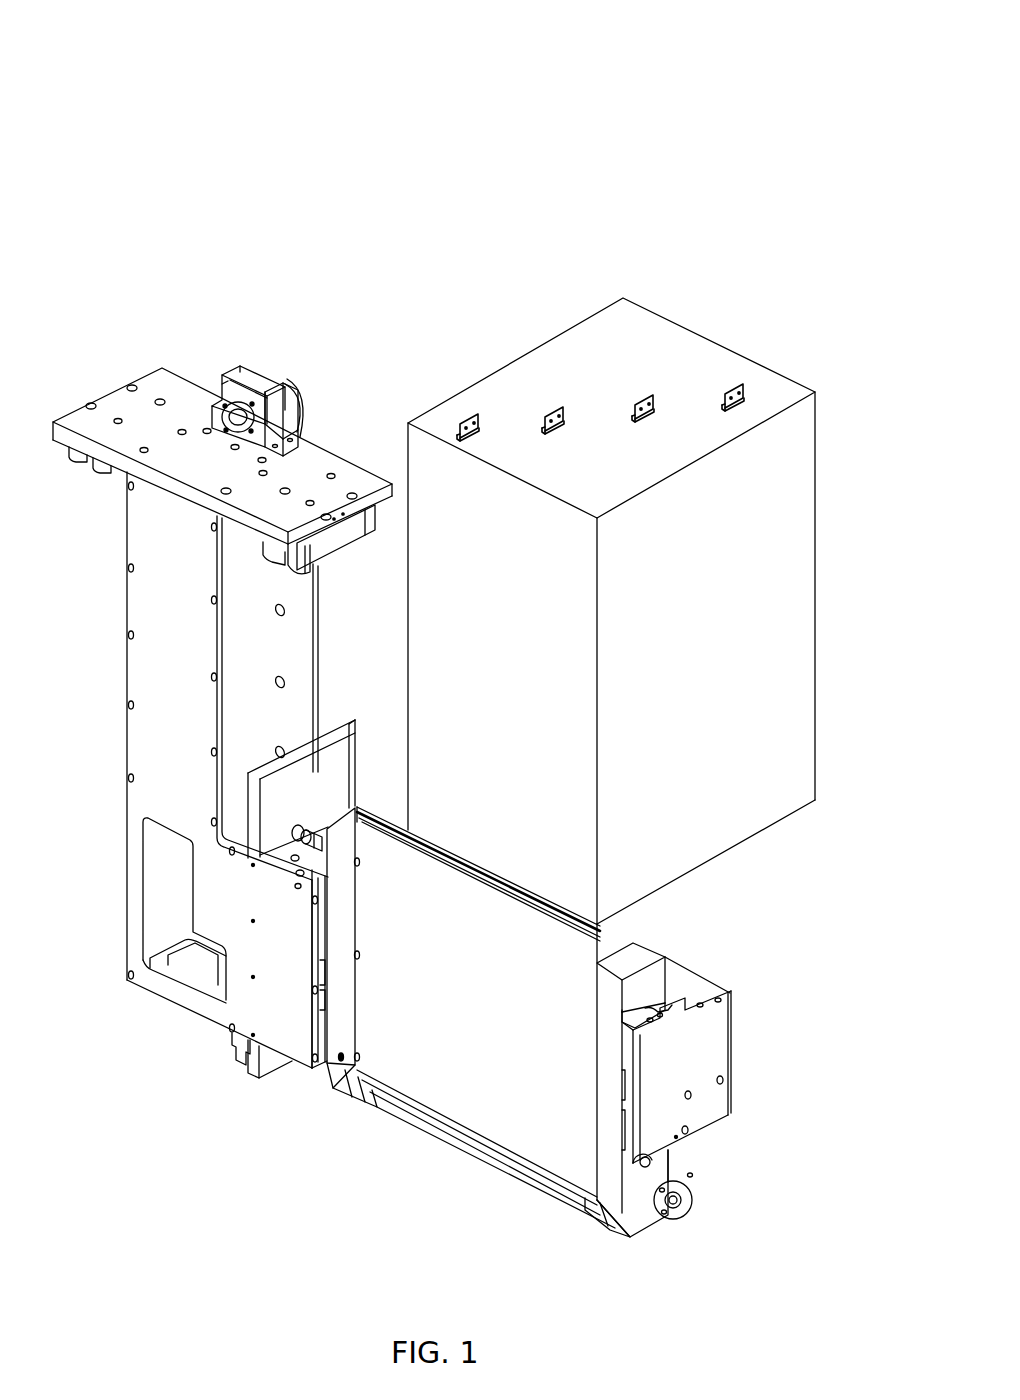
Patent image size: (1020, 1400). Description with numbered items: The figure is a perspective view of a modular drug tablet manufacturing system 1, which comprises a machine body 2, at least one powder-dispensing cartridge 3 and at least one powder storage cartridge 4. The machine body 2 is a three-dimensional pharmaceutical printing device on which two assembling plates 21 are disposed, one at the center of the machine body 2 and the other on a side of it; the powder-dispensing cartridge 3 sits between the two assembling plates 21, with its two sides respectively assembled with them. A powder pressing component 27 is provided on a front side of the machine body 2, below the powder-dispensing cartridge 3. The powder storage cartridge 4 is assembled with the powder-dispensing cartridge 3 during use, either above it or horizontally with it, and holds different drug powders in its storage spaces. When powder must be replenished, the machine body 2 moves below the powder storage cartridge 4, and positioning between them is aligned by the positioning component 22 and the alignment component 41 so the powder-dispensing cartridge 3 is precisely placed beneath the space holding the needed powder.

The modular drug tablet manufacturing system 1 is at (172, 156).
The machine body 2 is at (242, 902).
The assembling plate 21 is at (322, 937).
The positioning component 22 is at (270, 372).
The powder pressing component 27 is at (690, 1186).
The powder-dispensing cartridge 3 is at (633, 962).
The powder storage cartridge 4 is at (593, 350).
The alignment component 41 is at (468, 422).